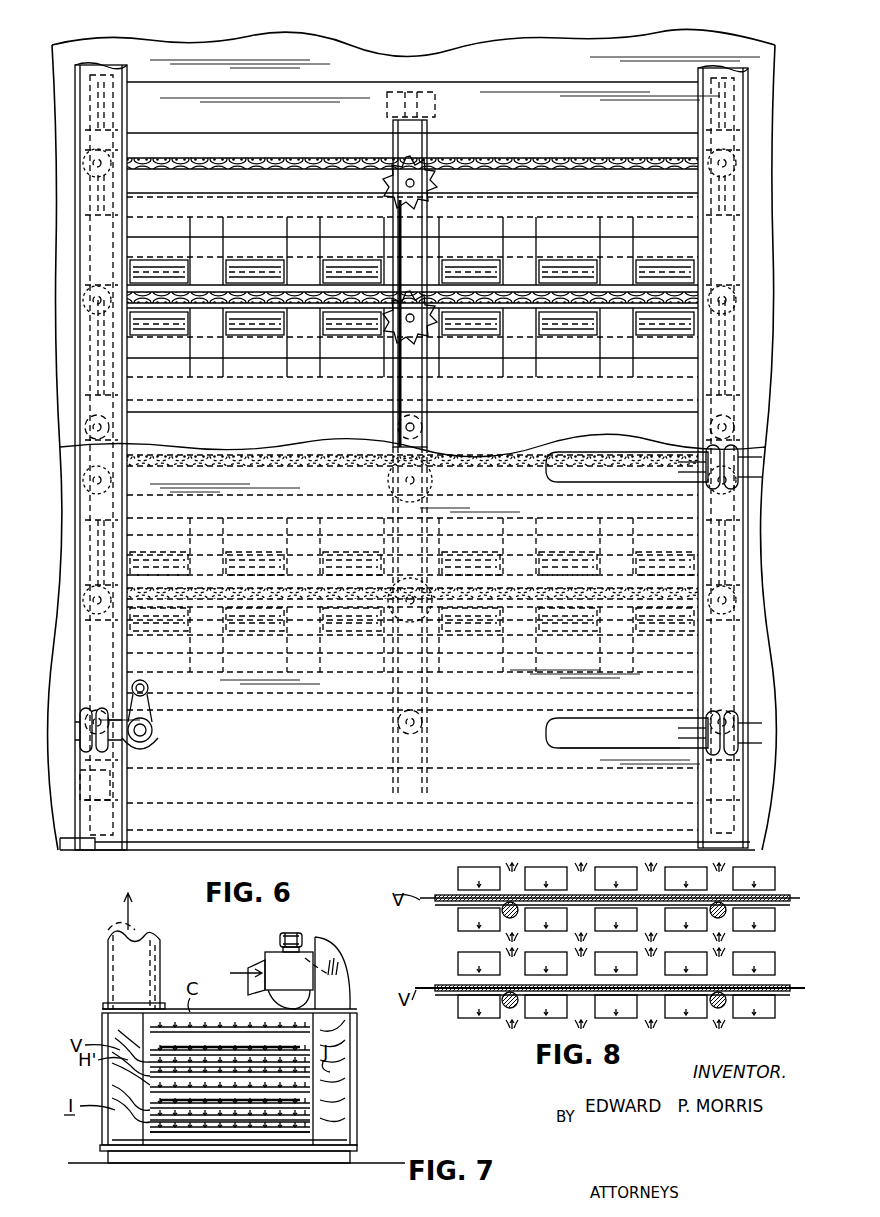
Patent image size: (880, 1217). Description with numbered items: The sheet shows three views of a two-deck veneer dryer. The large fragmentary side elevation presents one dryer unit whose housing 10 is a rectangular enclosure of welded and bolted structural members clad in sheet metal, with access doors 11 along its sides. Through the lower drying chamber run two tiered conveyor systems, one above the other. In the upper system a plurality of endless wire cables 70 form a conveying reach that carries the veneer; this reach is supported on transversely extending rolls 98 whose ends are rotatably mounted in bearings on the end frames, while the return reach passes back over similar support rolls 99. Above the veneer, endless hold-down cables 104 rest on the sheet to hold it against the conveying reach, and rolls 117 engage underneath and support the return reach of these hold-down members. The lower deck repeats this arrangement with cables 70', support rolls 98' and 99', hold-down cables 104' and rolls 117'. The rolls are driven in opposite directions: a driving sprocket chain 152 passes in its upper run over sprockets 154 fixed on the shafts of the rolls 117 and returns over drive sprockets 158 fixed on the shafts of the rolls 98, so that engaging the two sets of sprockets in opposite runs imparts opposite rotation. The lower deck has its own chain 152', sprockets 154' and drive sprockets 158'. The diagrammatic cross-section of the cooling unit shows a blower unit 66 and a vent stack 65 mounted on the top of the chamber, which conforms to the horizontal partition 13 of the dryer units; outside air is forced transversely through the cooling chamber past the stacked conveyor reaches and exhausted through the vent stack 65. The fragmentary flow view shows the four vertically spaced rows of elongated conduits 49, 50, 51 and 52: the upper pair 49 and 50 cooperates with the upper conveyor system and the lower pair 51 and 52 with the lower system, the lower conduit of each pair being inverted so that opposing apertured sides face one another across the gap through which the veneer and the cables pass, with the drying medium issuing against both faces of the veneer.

In FIG. 6, the housing 10 is at (72, 343).
In FIG. 6, the access doors 11 is at (725, 752).
In FIG. 7, the horizontal partition 13 is at (318, 1012).
In FIG. 6, the conduit means 49 is at (695, 236).
In FIG. 7, the conduit means 49 is at (315, 1040).
In FIG. 8, the conduit means 49 is at (778, 878).
In FIG. 6, the conduit means 50 is at (695, 370).
In FIG. 8, the conduit means 50 is at (778, 921).
In FIG. 6, the conduit means 51 is at (695, 529).
In FIG. 8, the conduit means 51 is at (778, 966).
In FIG. 6, the conduit means 52 is at (752, 664).
In FIG. 7, the conduit means 52 is at (282, 1118).
In FIG. 8, the conduit means 52 is at (778, 1012).
In FIG. 7, the vent stack 65 is at (150, 968).
In FIG. 7, the blower unit 66 is at (274, 961).
In FIG. 6, the wire cables 70 is at (460, 443).
In FIG. 7, the wire cables 70 is at (106, 1058).
In FIG. 8, the wire cables 70 is at (604, 919).
In FIG. 6, the wire cables 70' is at (157, 740).
In FIG. 7, the wire cables 70' is at (105, 1117).
In FIG. 8, the wire cables 70' is at (606, 1008).
In FIG. 7, the rolls 98 is at (267, 1054).
In FIG. 8, the rolls 98 is at (657, 929).
In FIG. 7, the rolls 98' is at (271, 1111).
In FIG. 8, the rolls 98' is at (626, 1024).
In FIG. 6, the support rolls 99 is at (438, 429).
In FIG. 7, the support rolls 99 is at (268, 1071).
In FIG. 6, the support rolls 99' is at (409, 725).
In FIG. 7, the support rolls 99' is at (271, 1134).
In FIG. 7, the hold-down cables 104 is at (230, 1009).
In FIG. 8, the hold-down cables 104 is at (610, 884).
In FIG. 7, the hold-down cables 104' is at (230, 1154).
In FIG. 8, the hold-down cables 104' is at (610, 971).
In FIG. 7, the rolls 117 is at (276, 1016).
In FIG. 7, the rolls 117' is at (275, 1091).
In FIG. 6, the driving sprocket chain 152 is at (412, 225).
In FIG. 6, the driving sprocket chain 152' is at (412, 509).
In FIG. 6, the sprockets 154 is at (415, 179).
In FIG. 6, the sprockets 154' is at (375, 487).
In FIG. 6, the drive sprockets 158 is at (412, 323).
In FIG. 6, the drive sprockets 158' is at (447, 628).